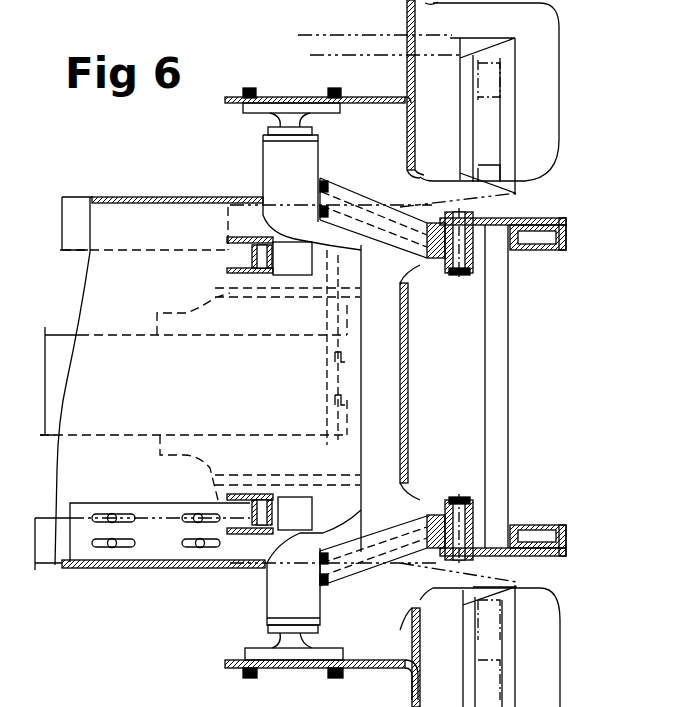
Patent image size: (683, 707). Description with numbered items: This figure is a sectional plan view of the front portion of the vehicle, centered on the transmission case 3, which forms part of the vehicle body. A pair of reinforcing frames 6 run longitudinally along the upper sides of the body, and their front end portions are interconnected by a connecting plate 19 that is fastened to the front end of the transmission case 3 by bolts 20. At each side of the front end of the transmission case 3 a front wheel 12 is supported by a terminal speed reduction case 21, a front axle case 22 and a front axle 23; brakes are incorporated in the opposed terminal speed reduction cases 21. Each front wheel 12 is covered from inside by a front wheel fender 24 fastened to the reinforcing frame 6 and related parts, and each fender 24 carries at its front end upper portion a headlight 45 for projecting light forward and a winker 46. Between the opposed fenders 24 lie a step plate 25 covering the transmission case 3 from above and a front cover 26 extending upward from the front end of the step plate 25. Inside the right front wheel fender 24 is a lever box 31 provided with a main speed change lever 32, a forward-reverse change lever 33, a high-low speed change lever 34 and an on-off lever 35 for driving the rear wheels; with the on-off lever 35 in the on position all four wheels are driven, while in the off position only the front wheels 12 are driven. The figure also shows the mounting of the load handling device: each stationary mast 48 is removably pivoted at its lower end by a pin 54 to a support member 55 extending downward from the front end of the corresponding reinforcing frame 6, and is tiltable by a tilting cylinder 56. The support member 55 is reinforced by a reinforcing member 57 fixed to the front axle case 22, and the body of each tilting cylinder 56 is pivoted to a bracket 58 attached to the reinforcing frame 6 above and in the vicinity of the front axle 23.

The transmission case 3 is at (124, 340).
The reinforcing frame 6 is at (76, 218).
The front wheel 12 is at (428, 7).
The connecting plate 19 is at (338, 385).
The bolt 20 is at (345, 358).
The terminal speed reduction case 21 is at (185, 312).
The front axle case 22 is at (276, 155).
The front axle 23 is at (290, 120).
The front wheel fender 24 is at (517, 110).
The step plate 25 is at (195, 282).
The front cover 26 is at (405, 378).
The lever box 31 is at (78, 505).
The main speed change lever 32 is at (112, 548).
The forward-reverse change lever 33 is at (112, 513).
The high-low speed change lever 34 is at (200, 548).
The on-off lever 35 is at (198, 513).
The headlight 45 is at (503, 165).
The winker 46 is at (498, 80).
The stationary mast 48 is at (546, 240).
The pin 54 is at (456, 274).
The support member 55 is at (438, 264).
The tilting cylinder 56 is at (300, 268).
The reinforcing member 57 is at (352, 195).
The bracket 58 is at (255, 274).